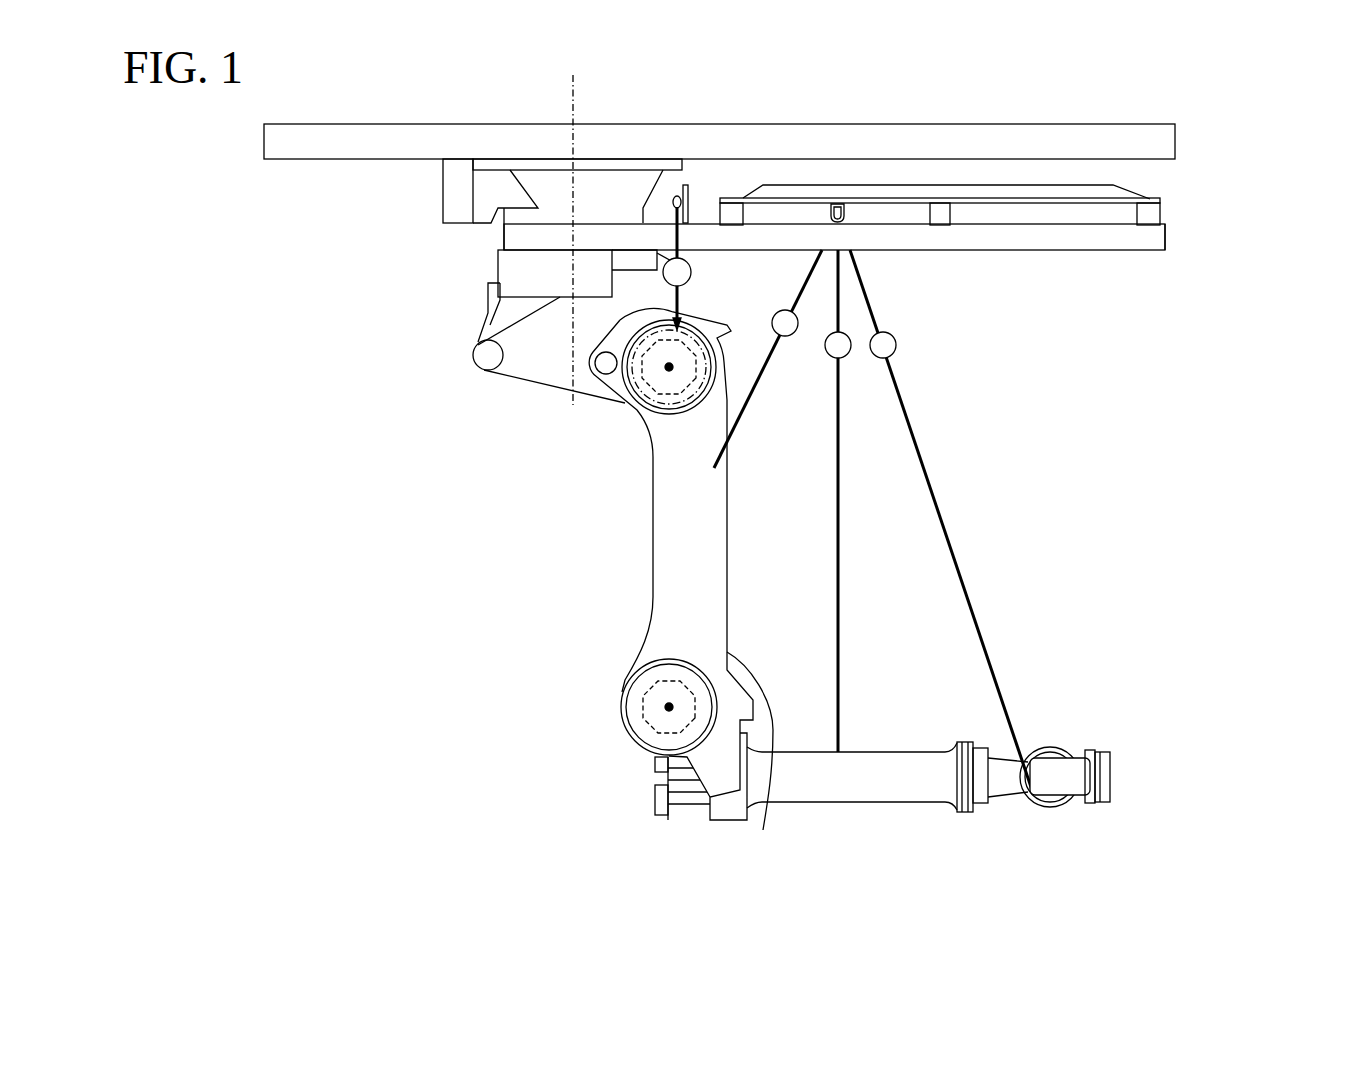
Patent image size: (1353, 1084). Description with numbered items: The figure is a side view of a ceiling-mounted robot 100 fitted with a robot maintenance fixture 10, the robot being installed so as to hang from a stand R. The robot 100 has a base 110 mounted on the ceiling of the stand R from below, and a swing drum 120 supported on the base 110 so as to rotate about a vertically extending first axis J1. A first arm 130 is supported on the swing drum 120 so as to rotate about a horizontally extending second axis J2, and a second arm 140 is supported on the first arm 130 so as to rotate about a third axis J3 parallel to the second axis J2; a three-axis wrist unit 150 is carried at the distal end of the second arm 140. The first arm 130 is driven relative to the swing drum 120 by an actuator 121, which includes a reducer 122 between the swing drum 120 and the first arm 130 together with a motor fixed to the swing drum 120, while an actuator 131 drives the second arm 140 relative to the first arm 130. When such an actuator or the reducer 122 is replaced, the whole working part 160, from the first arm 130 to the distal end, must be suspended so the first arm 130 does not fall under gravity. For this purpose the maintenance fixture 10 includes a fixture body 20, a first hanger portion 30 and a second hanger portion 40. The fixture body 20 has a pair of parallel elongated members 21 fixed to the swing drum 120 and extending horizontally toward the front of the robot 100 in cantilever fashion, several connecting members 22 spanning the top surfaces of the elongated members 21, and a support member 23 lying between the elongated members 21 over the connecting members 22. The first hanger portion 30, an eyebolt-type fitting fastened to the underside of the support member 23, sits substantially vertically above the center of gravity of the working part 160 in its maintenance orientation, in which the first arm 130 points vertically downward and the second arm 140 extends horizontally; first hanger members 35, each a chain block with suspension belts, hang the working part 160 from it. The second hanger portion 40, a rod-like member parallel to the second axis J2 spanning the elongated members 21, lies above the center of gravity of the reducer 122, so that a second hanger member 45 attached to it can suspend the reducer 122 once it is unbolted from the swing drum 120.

The robot maintenance fixture 10 is at (1190, 188).
The fixture body 20 is at (1159, 272).
The elongated members 21 is at (1050, 253).
The connecting members 22 is at (738, 196).
The support member 23 is at (998, 185).
The first hanger portion 30 is at (850, 203).
The first hanger members 35 is at (762, 413).
The second hanger portion 40 is at (689, 172).
The second hanger member 45 is at (695, 249).
The ceiling-mounted robot 100 is at (428, 346).
The base 110 is at (443, 205).
The swing drum 120 is at (505, 380).
The actuator 121 is at (612, 406).
The reducer 122 is at (648, 313).
The first arm 130 is at (763, 830).
The actuator 131 is at (610, 749).
The second arm 140 is at (850, 803).
The three-axis wrist unit 150 is at (1068, 828).
The working part 160 is at (1110, 910).
The stand R is at (347, 123).
The first axis J1 is at (573, 224).
The second axis J2 is at (669, 367).
The third axis J3 is at (669, 707).